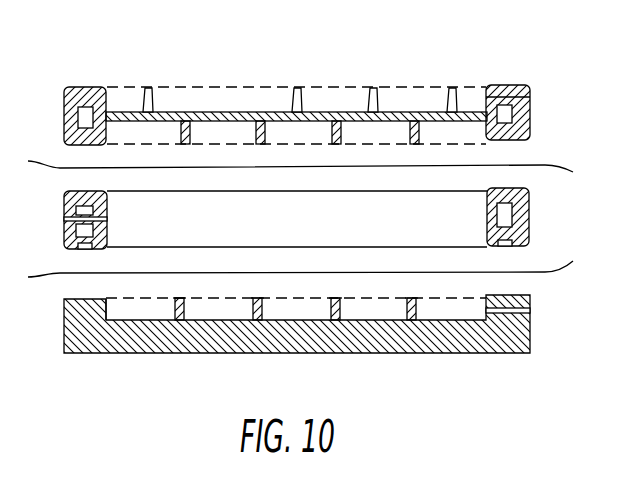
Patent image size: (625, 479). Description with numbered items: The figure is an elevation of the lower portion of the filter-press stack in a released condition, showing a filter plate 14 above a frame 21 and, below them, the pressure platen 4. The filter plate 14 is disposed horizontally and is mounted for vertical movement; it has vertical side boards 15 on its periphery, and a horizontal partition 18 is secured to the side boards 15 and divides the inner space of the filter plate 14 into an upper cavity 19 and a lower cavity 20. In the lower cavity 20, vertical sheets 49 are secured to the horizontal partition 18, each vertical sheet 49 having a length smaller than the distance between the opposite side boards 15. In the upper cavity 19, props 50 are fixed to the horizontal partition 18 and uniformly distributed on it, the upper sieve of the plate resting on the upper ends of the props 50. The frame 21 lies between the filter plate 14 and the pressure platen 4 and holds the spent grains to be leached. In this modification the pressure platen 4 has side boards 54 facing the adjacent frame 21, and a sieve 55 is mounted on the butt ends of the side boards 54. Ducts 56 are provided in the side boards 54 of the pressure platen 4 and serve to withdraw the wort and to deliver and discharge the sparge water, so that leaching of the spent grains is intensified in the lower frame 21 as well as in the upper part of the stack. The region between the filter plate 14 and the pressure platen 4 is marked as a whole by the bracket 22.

The pressure platen 4 is at (193, 342).
The filter plate 14 is at (81, 84).
The vertical side boards 15 is at (510, 86).
The horizontal partition 18 is at (170, 112).
The upper cavity 19 is at (203, 100).
The lower cavity 20 is at (312, 127).
The frame 21 is at (64, 232).
The intermediate frame 22 is at (300, 219).
The vertical sheets 49 is at (258, 122).
The props 50 is at (450, 98).
The side boards 54 is at (88, 312).
The sieve 55 is at (297, 298).
The ducts 56 is at (507, 312).